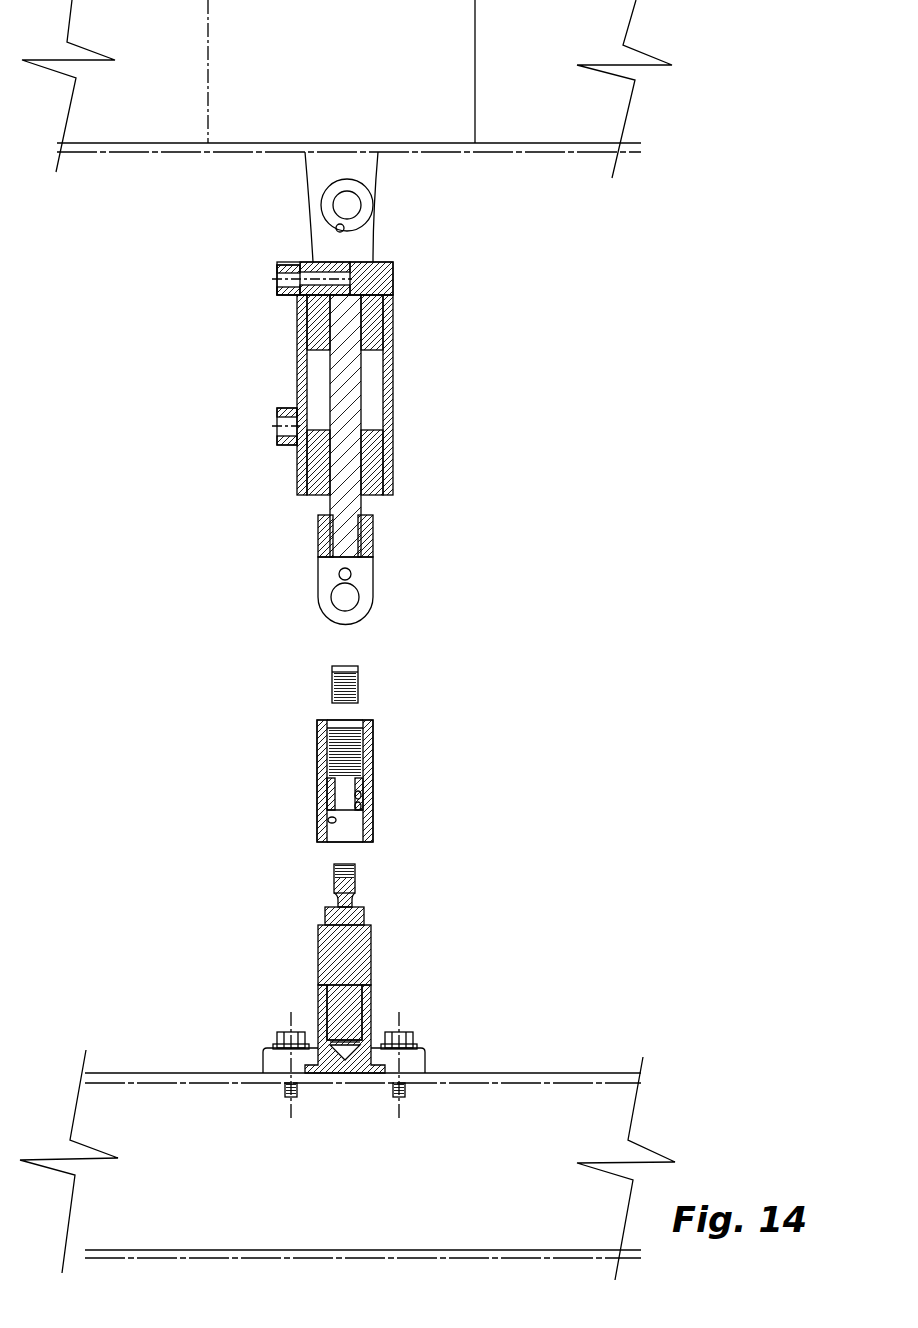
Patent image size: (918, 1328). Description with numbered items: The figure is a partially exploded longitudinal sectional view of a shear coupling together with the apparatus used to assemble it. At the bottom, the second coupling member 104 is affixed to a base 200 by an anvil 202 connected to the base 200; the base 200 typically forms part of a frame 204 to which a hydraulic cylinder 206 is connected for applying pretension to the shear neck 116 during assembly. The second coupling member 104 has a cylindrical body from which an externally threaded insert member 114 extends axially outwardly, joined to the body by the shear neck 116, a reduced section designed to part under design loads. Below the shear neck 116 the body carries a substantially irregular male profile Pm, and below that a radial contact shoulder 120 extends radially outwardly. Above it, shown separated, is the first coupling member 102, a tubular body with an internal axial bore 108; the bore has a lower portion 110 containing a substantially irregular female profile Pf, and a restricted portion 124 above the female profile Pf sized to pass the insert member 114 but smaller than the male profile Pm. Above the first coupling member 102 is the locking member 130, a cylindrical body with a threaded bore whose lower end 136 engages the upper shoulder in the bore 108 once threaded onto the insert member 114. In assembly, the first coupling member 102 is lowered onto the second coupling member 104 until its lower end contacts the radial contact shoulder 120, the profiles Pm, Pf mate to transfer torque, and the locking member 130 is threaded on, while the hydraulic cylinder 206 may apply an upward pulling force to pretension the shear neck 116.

The frame 204 is at (108, 153).
The hydraulic cylinder 206 is at (393, 390).
The locking member 130 is at (410, 676).
The lower end 136 is at (358, 710).
The first coupling member 102 is at (419, 787).
The axial bore 108 is at (370, 780).
The restricted portion 124 is at (375, 830).
The lower portion 110 is at (357, 843).
The insert member 114 is at (355, 880).
The shear neck 116 is at (333, 898).
The radial contact shoulder 120 is at (325, 918).
The second coupling member 104 is at (345, 951).
The anvil 202 is at (372, 1012).
The base 200 is at (565, 1073).
The substantially irregular female profile Pf is at (318, 841).
The substantially irregular male profile portion Pm is at (368, 918).